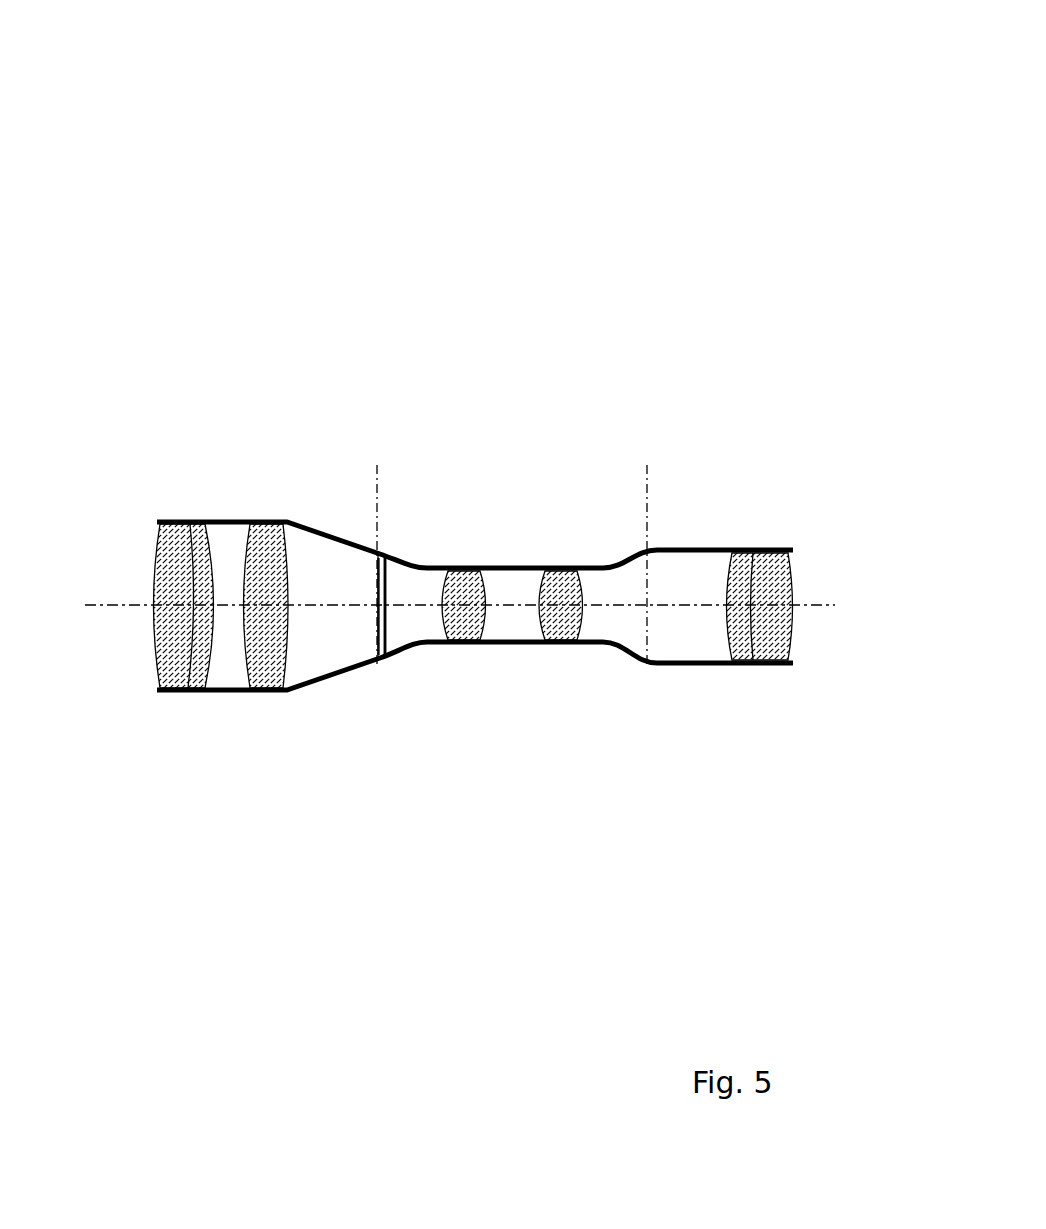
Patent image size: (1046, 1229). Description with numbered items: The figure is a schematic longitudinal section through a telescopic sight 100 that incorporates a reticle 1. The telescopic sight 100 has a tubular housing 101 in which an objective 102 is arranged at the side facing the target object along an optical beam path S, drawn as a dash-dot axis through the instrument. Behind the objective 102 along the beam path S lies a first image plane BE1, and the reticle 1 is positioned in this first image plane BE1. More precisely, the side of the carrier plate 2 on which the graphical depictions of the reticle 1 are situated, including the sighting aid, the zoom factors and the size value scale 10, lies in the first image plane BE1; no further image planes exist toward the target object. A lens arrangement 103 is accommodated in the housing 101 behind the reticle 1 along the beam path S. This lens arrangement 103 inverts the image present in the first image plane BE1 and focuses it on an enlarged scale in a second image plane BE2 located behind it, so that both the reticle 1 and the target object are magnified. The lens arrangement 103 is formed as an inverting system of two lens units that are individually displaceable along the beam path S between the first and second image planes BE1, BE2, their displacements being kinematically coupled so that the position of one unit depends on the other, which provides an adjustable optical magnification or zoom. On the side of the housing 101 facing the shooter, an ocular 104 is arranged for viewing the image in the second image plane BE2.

The telescopic sight 100 is at (762, 84).
The tubular housing 101 is at (215, 694).
The objective 102 is at (175, 578).
The lens arrangement 103 is at (465, 598).
The ocular 104 is at (767, 578).
The reticle 1 is at (382, 666).
The carrier plate 2 is at (384, 636).
The size value scale 10 is at (377, 613).
The first image plane BE1 is at (376, 548).
The second image plane BE2 is at (640, 547).
The optical beam path S is at (460, 589).